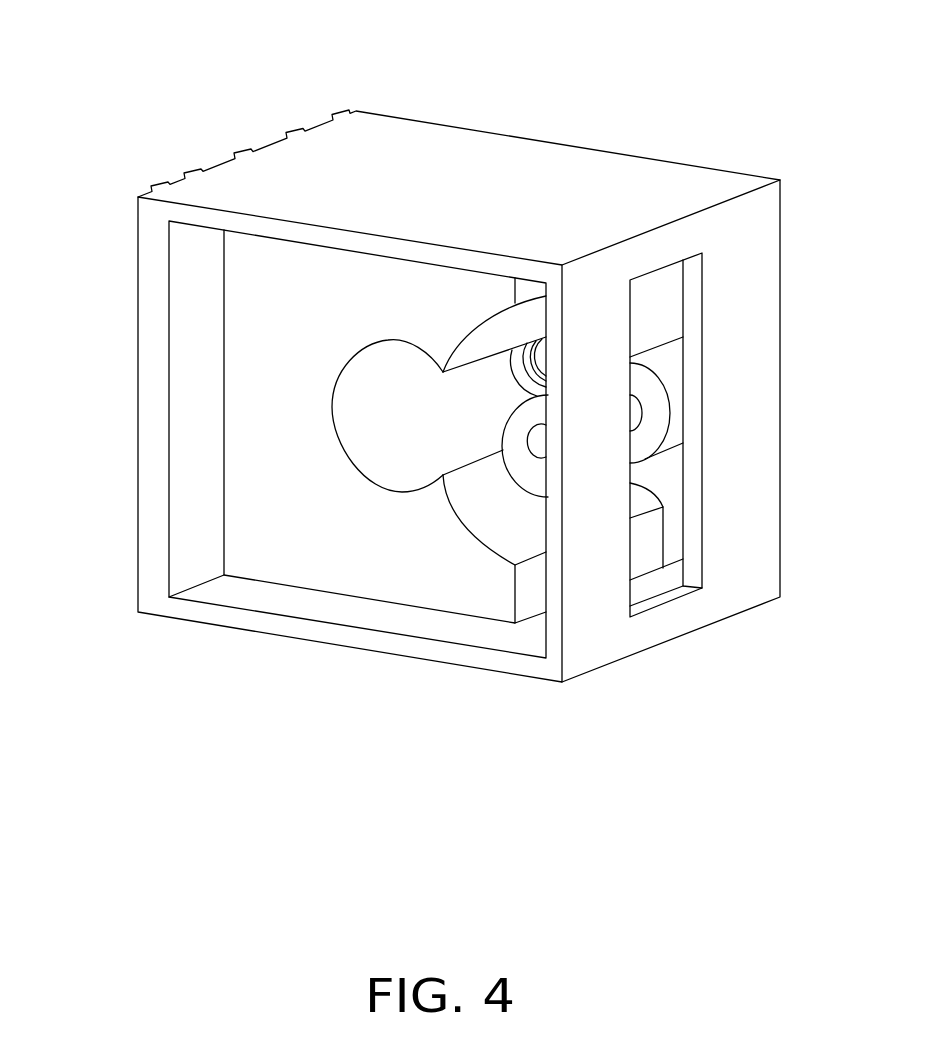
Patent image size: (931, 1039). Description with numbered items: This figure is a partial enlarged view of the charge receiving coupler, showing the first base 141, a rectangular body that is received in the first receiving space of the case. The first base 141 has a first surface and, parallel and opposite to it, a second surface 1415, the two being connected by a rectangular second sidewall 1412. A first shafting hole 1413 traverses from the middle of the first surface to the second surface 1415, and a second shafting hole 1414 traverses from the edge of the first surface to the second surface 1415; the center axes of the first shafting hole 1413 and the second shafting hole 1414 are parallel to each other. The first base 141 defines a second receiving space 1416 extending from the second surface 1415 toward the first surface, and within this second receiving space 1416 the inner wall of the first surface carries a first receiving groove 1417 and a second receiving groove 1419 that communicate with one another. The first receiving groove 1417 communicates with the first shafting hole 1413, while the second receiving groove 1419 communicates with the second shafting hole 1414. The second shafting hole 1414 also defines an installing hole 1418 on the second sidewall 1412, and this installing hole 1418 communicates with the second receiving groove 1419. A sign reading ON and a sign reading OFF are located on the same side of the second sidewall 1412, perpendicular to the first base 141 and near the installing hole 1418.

The first base 141 is at (530, 182).
The second sidewall 1412 is at (580, 647).
The first shafting hole 1413 is at (542, 355).
The second shafting hole 1414 is at (540, 450).
The second surface 1415 is at (155, 311).
The second receiving space 1416 is at (197, 433).
The first receiving groove 1417 is at (378, 452).
The installing hole 1418 is at (657, 478).
The second receiving groove 1419 is at (475, 502).